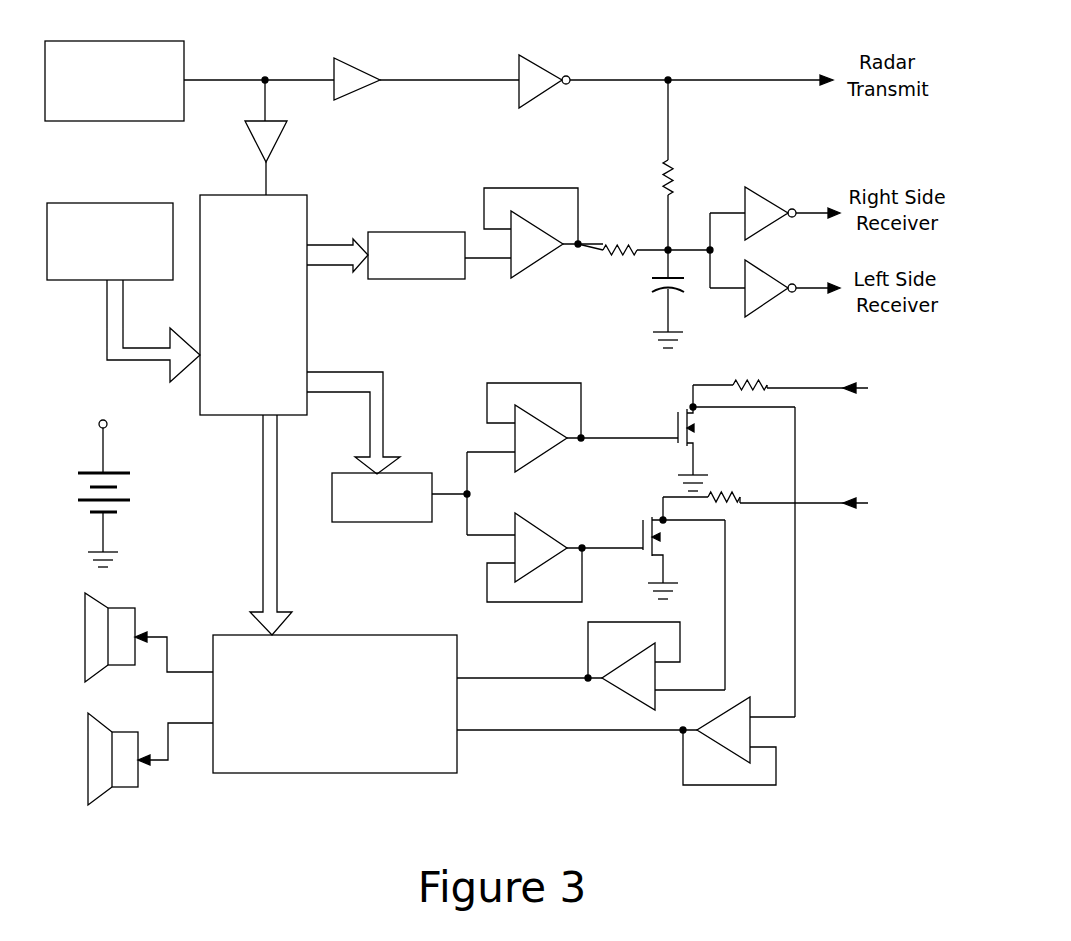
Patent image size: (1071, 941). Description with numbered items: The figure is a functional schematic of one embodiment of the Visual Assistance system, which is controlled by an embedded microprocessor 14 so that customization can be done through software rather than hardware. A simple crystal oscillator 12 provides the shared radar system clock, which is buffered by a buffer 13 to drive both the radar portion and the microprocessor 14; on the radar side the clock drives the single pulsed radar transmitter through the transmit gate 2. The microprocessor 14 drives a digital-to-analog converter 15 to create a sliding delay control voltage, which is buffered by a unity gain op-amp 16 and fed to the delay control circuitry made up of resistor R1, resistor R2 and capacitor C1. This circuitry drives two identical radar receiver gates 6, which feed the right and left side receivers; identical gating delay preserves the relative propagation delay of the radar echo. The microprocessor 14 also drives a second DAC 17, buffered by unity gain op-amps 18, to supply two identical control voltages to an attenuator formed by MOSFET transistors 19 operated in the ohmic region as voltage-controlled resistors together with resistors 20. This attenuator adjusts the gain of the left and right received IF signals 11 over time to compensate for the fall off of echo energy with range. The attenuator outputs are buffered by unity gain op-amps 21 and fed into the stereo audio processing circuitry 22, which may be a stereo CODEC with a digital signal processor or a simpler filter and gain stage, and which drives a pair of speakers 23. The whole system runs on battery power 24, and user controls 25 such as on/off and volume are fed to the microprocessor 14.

The transmit gate 2 is at (551, 54).
The radar receiver gates 6 is at (787, 252).
The received IF signal 11 is at (845, 455).
The crystal oscillator 12 is at (149, 60).
The buffer 13 is at (351, 109).
The microprocessor 14 is at (243, 273).
The digital-to-analog converter 15 is at (416, 223).
The unity gain op-amp 16 is at (543, 260).
The DAC 17 is at (386, 453).
The unity gain op-amps 18 is at (582, 492).
The MOSFET transistors 19 is at (660, 486).
The resistors 20 is at (741, 416).
The unity gain op-amps 21 is at (626, 716).
The stereo audio processing circuitry 22 is at (335, 672).
The speakers 23 is at (149, 699).
The battery 24 is at (139, 481).
The user controls 25 is at (110, 211).
The delay control resistor R1 is at (621, 213).
The delay control resistor R2 is at (697, 162).
The delay control capacitor C1 is at (637, 303).